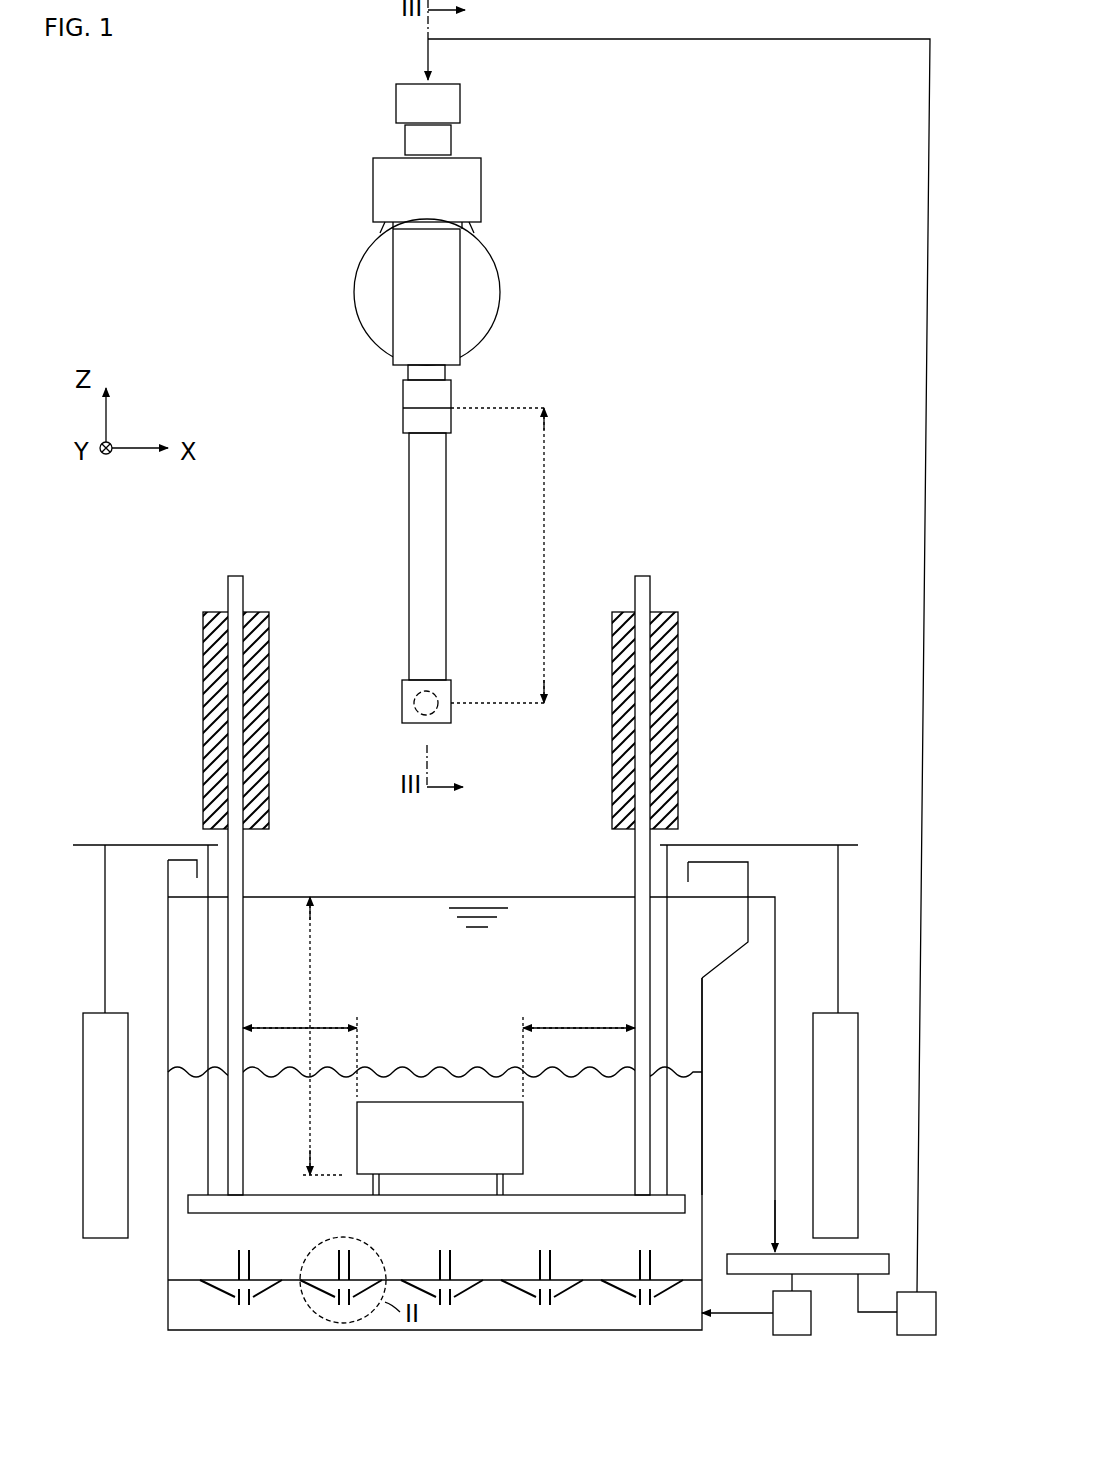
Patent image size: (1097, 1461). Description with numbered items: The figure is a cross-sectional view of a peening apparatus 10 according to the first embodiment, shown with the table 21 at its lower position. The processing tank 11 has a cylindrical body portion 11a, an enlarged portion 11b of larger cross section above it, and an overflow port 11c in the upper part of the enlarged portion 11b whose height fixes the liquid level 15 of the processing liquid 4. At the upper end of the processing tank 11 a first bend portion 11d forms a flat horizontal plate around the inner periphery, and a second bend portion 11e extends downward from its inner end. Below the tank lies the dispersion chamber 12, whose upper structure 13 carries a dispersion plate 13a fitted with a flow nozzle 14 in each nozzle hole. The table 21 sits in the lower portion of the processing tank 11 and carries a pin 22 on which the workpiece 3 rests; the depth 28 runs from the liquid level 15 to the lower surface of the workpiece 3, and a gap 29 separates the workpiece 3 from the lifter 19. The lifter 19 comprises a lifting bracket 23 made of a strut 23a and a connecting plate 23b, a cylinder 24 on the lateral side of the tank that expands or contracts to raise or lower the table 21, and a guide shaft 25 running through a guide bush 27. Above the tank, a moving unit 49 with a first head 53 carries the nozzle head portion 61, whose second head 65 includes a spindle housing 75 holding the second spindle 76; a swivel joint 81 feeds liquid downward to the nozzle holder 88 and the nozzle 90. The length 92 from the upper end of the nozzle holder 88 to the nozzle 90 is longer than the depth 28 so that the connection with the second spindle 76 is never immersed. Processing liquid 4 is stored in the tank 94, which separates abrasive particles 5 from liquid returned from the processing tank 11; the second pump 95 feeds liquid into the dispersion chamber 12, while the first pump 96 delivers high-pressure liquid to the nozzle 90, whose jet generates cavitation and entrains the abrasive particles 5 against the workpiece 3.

The workpiece 3 is at (525, 1115).
The processing liquid 4 is at (760, 1170).
The abrasive particles 5 is at (331, 875).
The peening apparatus 10 is at (932, 14).
The processing tank 11 is at (481, 1062).
The body portion 11a is at (703, 1017).
The enlarged portion 11b is at (749, 930).
The overflow port 11c is at (750, 895).
The first bend portion 11d is at (720, 860).
The second bend portion 11e is at (688, 877).
The dispersion chamber 12 is at (168, 1300).
The vibration plate 13 is at (435, 1266).
The dispersion plate 13a is at (200, 1280).
The flow nozzle 14 is at (250, 1266).
The liquid level 15 is at (481, 893).
The lifter 19 is at (91, 717).
The table 21 is at (557, 1213).
The pin 22 is at (507, 1183).
The lifting bracket 23 is at (790, 843).
The strut 23a is at (208, 990).
The connecting plate 23b is at (151, 845).
The cylinder 24 is at (89, 1013).
The guide shaft 25 is at (245, 950).
The guide bush 27 is at (203, 665).
The depth 28 is at (308, 1102).
The gap 29 is at (287, 1025).
The moving unit 49 is at (456, 292).
The first head 53 is at (378, 338).
The nozzle head portion 61 is at (406, 578).
The second head 65 is at (373, 191).
The spindle housing 75 is at (393, 281).
The second spindle 76 is at (453, 387).
The swivel joint 81 is at (396, 104).
The nozzle holder 88 is at (447, 532).
The nozzle 90 is at (437, 698).
The length 92 is at (545, 508).
The tank 94 is at (757, 1254).
The second pump 95 is at (773, 1302).
The first pump 96 is at (922, 1292).